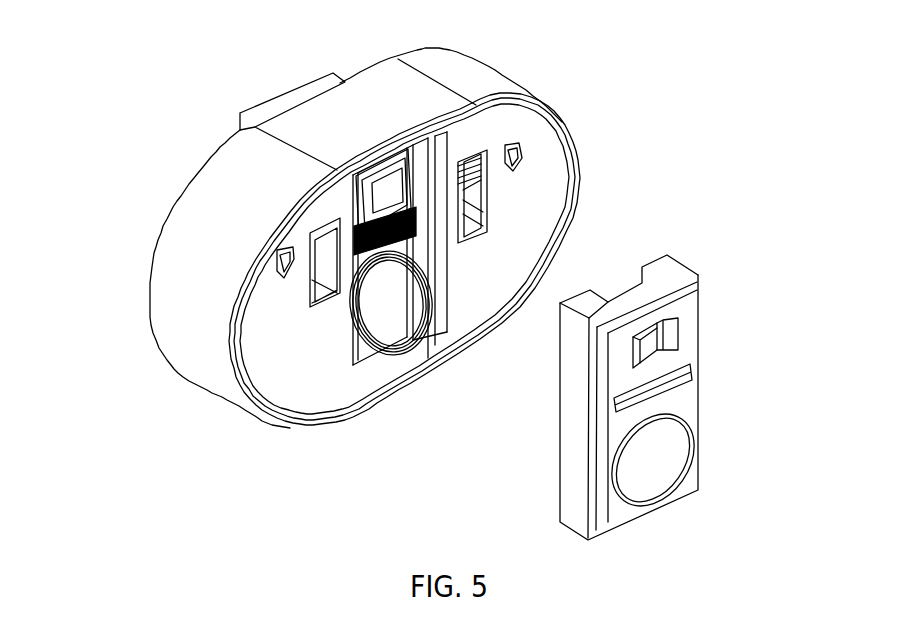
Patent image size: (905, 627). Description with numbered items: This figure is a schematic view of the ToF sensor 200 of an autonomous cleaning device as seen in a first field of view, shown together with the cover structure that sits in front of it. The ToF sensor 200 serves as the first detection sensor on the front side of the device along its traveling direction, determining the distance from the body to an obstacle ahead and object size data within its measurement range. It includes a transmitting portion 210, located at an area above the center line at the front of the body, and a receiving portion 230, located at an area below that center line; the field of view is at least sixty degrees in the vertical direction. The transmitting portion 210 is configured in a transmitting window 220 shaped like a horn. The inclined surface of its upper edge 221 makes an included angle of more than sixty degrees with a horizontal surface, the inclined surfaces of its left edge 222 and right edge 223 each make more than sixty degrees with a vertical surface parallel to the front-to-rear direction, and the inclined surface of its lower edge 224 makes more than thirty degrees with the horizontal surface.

The ToF sensor 200 is at (158, 101).
The transmitting portion 210 is at (404, 164).
The transmitting window 220 is at (780, 223).
The upper edge 221 is at (652, 332).
The left edge 222 is at (632, 350).
The right edge 223 is at (668, 337).
The lower edge 224 is at (653, 353).
The receiving portion 230 is at (392, 300).